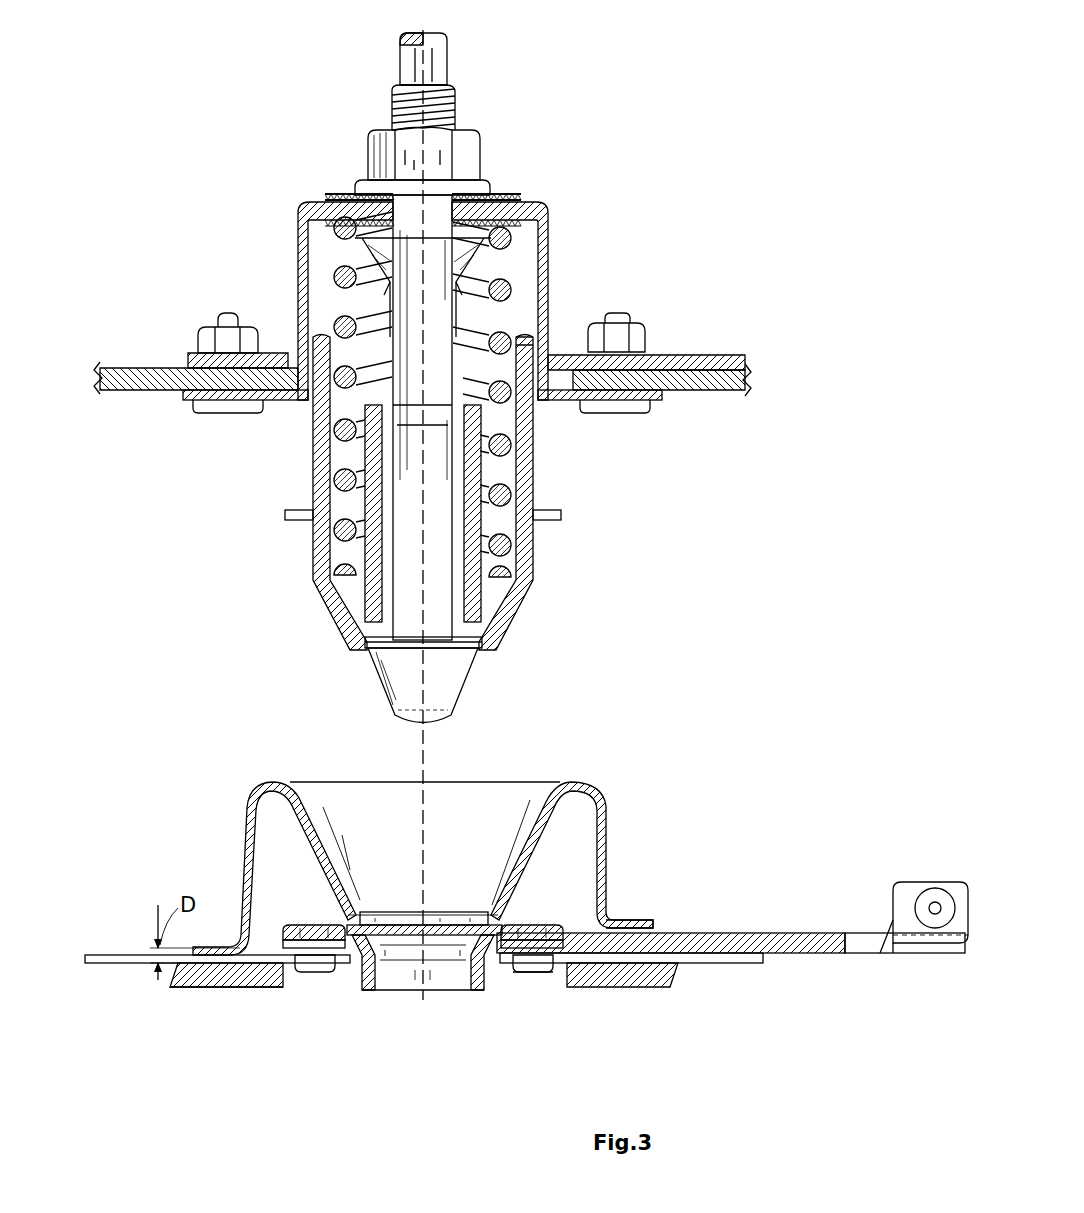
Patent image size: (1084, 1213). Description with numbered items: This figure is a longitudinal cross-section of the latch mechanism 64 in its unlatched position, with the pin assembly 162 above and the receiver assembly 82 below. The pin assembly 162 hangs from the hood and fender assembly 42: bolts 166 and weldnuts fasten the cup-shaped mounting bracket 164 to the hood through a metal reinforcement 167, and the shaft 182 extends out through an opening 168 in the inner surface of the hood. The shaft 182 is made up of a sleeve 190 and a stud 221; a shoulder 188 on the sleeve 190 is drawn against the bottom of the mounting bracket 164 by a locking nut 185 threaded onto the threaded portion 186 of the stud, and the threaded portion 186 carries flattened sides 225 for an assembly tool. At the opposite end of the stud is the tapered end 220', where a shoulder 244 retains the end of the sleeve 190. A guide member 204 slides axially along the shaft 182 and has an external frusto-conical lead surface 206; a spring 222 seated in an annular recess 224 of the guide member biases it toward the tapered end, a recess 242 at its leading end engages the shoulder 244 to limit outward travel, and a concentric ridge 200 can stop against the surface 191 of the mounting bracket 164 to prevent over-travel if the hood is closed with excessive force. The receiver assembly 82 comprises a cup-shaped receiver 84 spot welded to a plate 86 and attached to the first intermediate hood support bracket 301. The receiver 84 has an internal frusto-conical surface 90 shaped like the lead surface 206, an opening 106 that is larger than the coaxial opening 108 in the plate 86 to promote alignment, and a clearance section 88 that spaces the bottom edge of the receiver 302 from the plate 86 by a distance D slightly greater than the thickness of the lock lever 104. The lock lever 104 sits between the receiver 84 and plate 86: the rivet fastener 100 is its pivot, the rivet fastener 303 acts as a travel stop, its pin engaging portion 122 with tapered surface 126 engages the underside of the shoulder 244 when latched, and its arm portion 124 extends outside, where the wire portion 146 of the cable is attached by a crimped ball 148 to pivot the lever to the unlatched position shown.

The latch mechanism 64 is at (758, 114).
The flattened sides 225 is at (430, 58).
The threaded portion 186 is at (447, 105).
The locking nut 185 is at (470, 160).
The shoulder 188 is at (365, 215).
The mounting bracket 164 is at (298, 235).
The sleeve 190 is at (465, 238).
The stud 221 is at (505, 290).
The spring 222 is at (434, 323).
The shaft 182 is at (372, 303).
The hood and fender assembly 42 is at (133, 368).
The metal reinforcement 167 is at (712, 355).
The surface 191 is at (270, 400).
The bolts 166 is at (215, 412).
The opening 168 is at (590, 413).
The pin assembly 162 is at (312, 612).
The guide member 204 is at (525, 500).
The concentric ridge 200 is at (290, 515).
The annular recess 224 is at (512, 528).
The frusto-conical lead surface 206 is at (500, 645).
The recess 242 is at (366, 652).
The shoulder 244 is at (445, 645).
The tapered end 220' is at (451, 701).
The receiver assembly 82 is at (402, 845).
The cup-shaped receiver 84 is at (272, 845).
The frusto-conical surface 90 is at (532, 786).
The clearance section 88 is at (620, 918).
The opening 106 is at (372, 900).
The pin engaging portion 122 is at (498, 943).
The opening 108 is at (378, 992).
The tapered surface 126 is at (440, 958).
The rivet fastener 303 is at (312, 928).
The arm portion 124 is at (752, 935).
The plate 86 is at (245, 990).
The first intermediate hood support bracket 301 is at (225, 990).
The bottom edge of the receiver 302 is at (635, 988).
The rivet fastener 100 is at (538, 974).
The crimped ball 148 is at (938, 886).
The wire portion 146 is at (933, 906).
The lock lever 104 is at (818, 980).